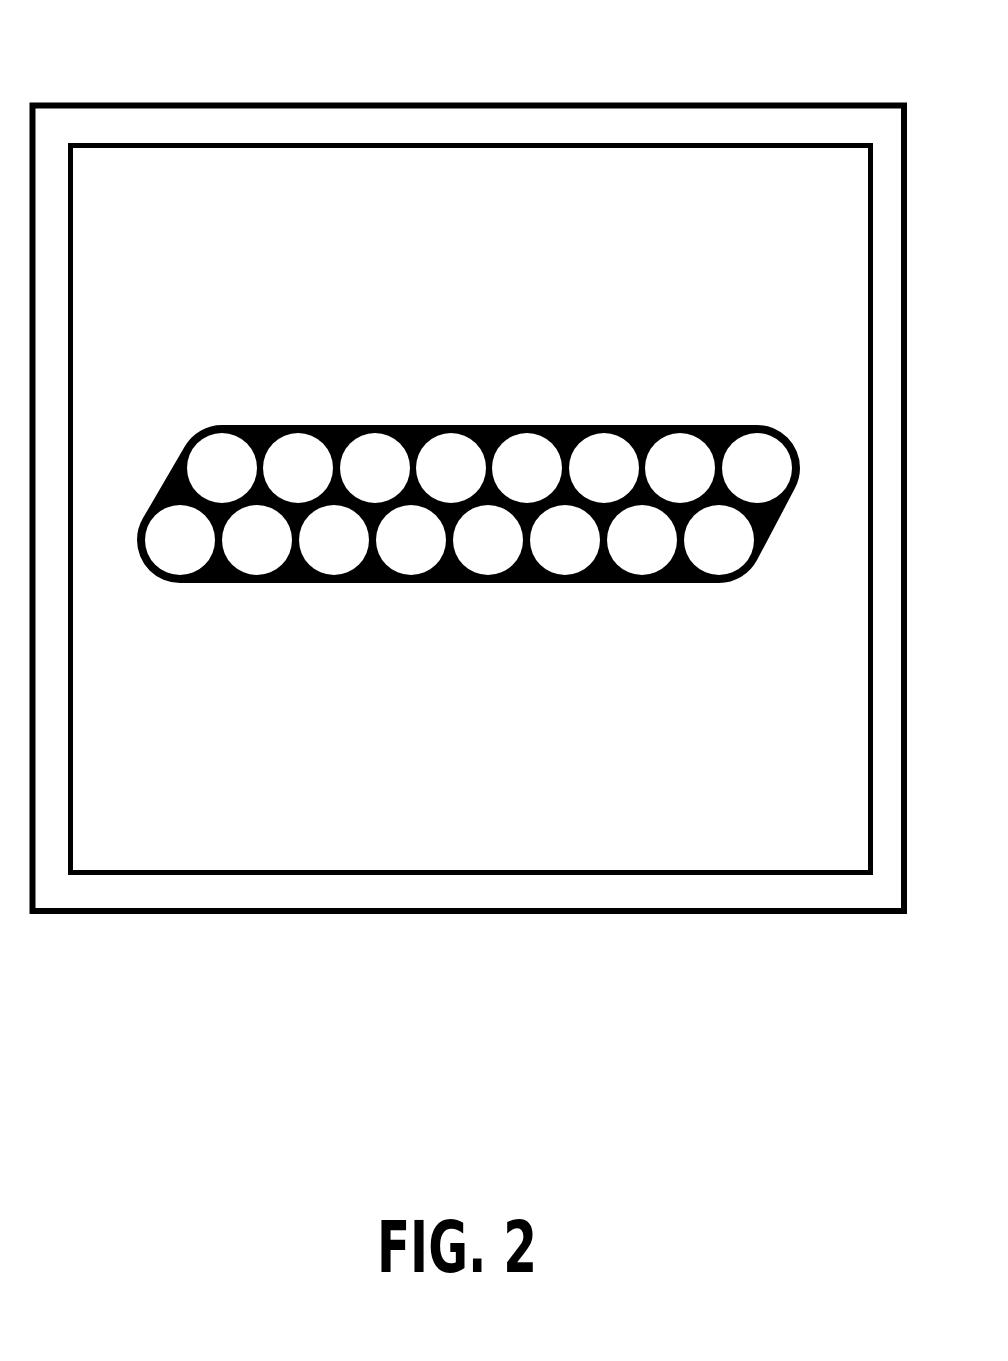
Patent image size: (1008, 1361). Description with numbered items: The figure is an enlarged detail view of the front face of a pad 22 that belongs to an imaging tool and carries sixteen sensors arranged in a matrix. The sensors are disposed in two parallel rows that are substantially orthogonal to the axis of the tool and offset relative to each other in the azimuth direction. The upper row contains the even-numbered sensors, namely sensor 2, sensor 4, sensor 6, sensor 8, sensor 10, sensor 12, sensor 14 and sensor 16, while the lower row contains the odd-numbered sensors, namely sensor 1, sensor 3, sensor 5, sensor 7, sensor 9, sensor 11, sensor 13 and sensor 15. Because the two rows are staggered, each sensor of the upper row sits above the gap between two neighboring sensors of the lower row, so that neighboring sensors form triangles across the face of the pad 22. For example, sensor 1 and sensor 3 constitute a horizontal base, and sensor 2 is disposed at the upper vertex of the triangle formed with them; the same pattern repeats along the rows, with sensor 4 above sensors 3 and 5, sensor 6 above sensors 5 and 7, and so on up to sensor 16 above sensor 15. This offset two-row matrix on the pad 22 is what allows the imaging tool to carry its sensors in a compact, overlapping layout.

The pad 22 is at (653, 217).
The sensor 1 is at (180, 540).
The sensor 2 is at (222, 468).
The sensor 3 is at (257, 540).
The sensor 4 is at (298, 468).
The sensor 5 is at (334, 540).
The sensor 6 is at (375, 468).
The sensor 7 is at (411, 540).
The sensor 8 is at (451, 468).
The sensor 9 is at (488, 540).
The sensor 10 is at (527, 468).
The sensor 11 is at (565, 540).
The sensor 12 is at (604, 468).
The sensor 13 is at (642, 540).
The sensor 14 is at (680, 468).
The sensor 15 is at (719, 540).
The sensor 16 is at (757, 468).